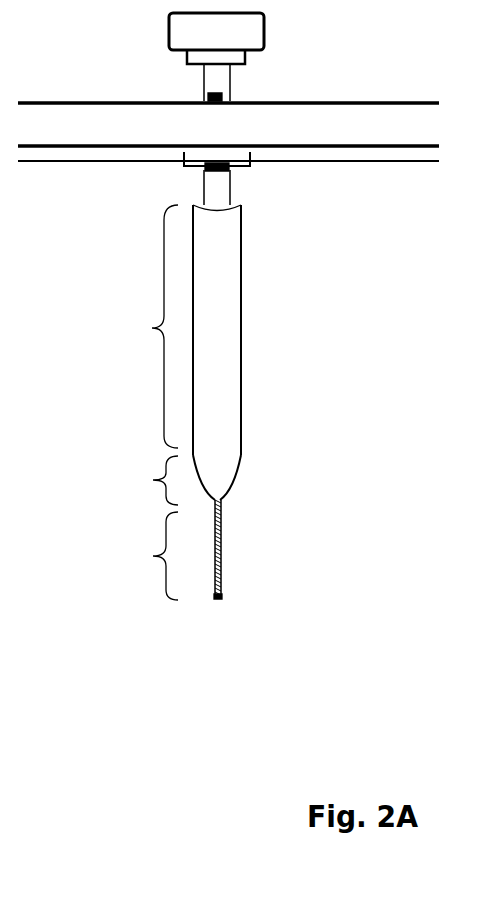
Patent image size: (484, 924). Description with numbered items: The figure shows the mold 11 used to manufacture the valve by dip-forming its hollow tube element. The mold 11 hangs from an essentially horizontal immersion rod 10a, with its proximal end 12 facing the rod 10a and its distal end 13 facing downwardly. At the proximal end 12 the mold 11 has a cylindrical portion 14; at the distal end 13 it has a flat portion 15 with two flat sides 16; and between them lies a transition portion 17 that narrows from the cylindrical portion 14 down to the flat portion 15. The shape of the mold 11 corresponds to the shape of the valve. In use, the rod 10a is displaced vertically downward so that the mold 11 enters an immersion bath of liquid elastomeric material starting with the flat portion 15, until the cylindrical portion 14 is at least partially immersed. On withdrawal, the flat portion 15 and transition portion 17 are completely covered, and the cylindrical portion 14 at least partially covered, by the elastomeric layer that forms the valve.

The immersion rod 10a is at (280, 97).
The mold 11 is at (112, 241).
The proximal end 12 is at (250, 212).
The distal end 13 is at (232, 596).
The cylindrical portion 14 is at (145, 326).
The flat portion 15 is at (145, 556).
The flat sides 16 is at (222, 539).
The transition portion 17 is at (176, 480).